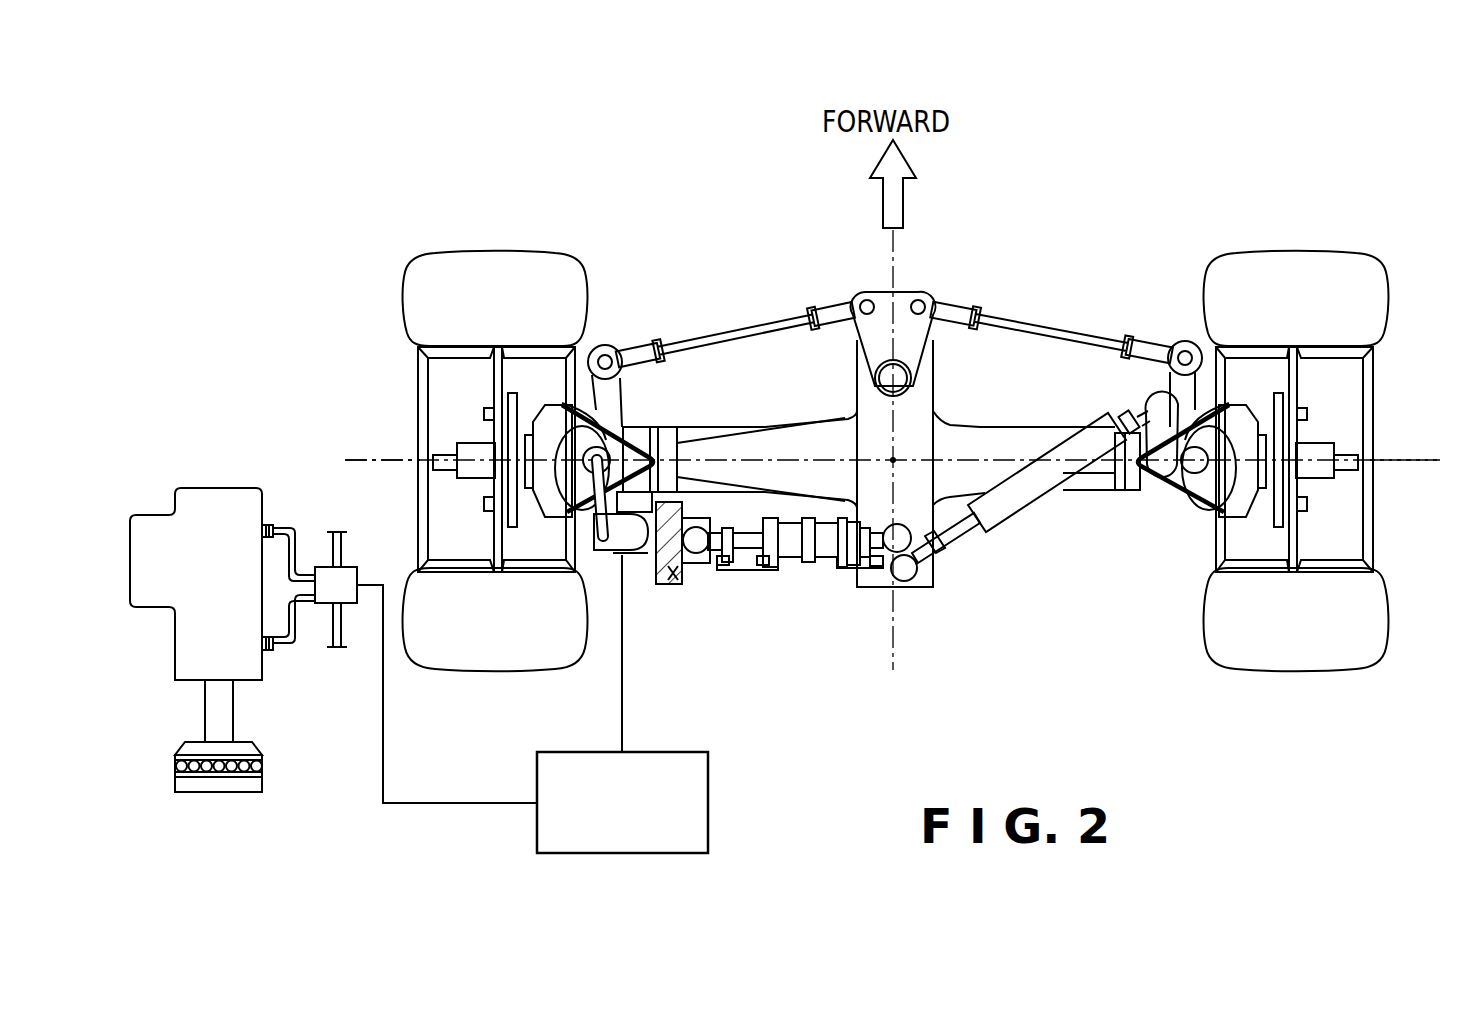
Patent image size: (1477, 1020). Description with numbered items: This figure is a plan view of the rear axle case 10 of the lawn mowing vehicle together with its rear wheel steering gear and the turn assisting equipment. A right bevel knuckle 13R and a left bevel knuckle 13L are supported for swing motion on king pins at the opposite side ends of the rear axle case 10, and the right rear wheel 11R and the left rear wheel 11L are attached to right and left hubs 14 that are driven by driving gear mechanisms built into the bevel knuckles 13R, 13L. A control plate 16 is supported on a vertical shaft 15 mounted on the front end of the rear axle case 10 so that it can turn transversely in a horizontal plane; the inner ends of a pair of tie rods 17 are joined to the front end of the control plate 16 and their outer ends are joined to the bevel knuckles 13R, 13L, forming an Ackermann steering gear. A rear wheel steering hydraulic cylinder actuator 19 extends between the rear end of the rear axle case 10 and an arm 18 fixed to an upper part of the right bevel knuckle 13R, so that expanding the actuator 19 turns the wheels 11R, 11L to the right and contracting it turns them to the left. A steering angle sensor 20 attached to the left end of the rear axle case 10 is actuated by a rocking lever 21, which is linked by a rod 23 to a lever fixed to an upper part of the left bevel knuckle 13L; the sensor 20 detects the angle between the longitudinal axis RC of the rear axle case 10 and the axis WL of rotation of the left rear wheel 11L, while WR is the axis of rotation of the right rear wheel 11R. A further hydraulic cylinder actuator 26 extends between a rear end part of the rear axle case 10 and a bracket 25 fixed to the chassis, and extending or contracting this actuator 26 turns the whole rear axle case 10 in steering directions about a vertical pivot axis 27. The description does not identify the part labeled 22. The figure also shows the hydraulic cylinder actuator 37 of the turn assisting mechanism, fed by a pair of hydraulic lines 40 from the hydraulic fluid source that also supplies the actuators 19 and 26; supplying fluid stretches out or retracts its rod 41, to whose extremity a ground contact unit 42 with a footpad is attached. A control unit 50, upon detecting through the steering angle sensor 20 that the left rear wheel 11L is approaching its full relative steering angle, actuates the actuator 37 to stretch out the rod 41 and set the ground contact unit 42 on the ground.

The rear axle case 10 is at (983, 427).
The left rear wheel 11L is at (498, 258).
The right rear wheel 11R is at (1283, 255).
The left bevel knuckle 13L is at (562, 512).
The right bevel knuckle 13R is at (1215, 492).
The hub 14 is at (508, 485).
The vertical shaft 15 is at (883, 382).
The control plate 16 is at (900, 295).
The tie rod 17 is at (713, 340).
The arm 18 is at (1167, 450).
The rear wheel steering hydraulic cylinder actuator 19 is at (1020, 503).
The steering angle sensor 20 is at (660, 560).
The rocking lever 21 is at (630, 545).
The cylinder 22 is at (625, 450).
The rod 23 is at (593, 530).
The bracket 25 is at (678, 572).
The hydraulic cylinder actuator 26 is at (808, 563).
The vertical pivot axis 27 is at (920, 574).
The hydraulic cylinder actuator 37 is at (212, 505).
The hydraulic lines 40 is at (293, 543).
The rod 41 is at (215, 715).
The ground contact unit 42 is at (265, 764).
The control unit 50 is at (708, 795).
The longitudinal axis of the rear axle case RC is at (745, 460).
The axis of rotation of the left rear wheel WL is at (378, 447).
The axis of rotation of the right rear wheel WR is at (1413, 447).